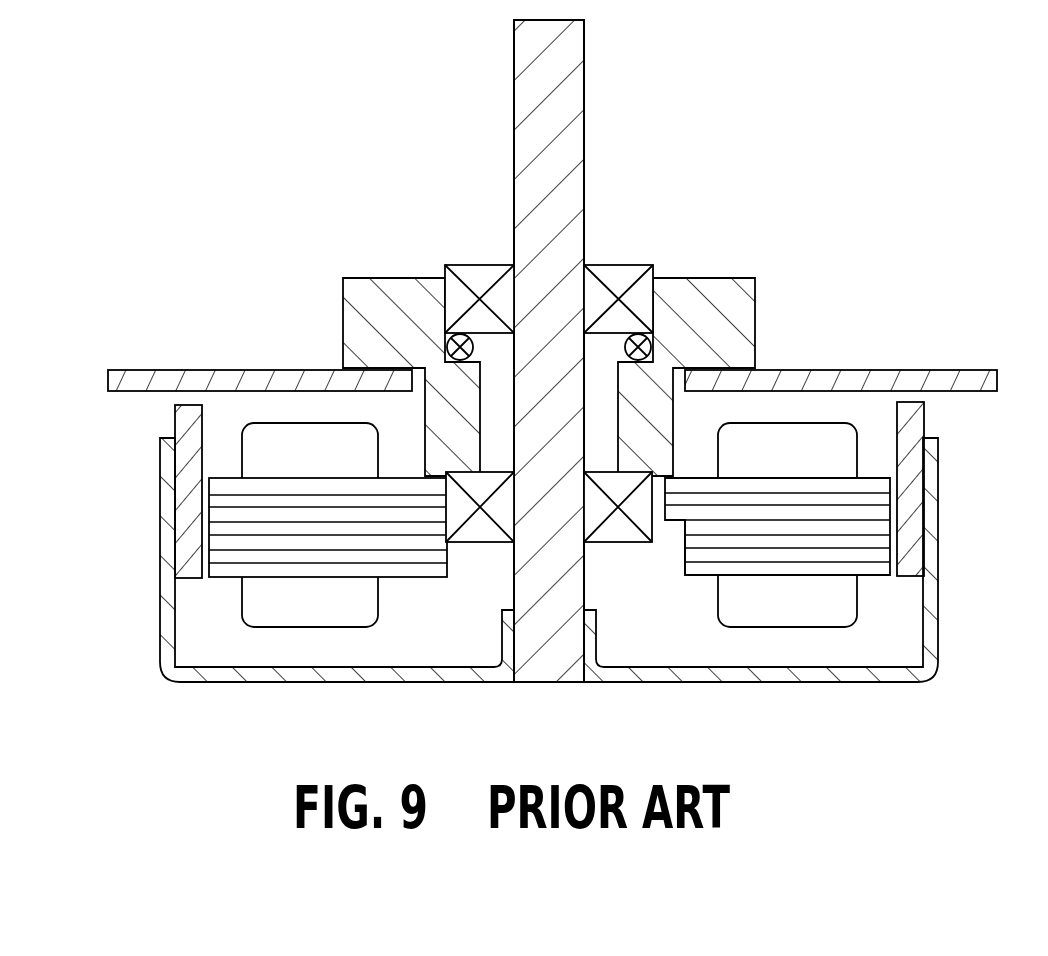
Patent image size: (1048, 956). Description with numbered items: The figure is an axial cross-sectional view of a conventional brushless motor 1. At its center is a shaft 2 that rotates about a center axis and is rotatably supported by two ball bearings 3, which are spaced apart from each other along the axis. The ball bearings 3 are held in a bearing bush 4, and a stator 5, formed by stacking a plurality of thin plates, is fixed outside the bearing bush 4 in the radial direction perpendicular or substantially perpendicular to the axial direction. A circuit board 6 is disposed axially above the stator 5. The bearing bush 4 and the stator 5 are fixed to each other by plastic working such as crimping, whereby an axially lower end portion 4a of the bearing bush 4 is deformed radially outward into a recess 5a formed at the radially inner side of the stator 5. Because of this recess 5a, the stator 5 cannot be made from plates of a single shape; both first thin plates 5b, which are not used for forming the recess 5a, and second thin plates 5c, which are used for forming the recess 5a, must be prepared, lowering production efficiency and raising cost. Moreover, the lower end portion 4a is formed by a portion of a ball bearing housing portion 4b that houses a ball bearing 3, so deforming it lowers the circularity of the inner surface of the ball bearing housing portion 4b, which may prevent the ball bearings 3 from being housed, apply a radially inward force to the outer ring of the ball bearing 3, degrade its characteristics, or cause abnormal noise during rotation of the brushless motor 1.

The brushless motor 1 is at (172, 62).
The shaft 2 is at (527, 138).
The ball bearings 3 is at (477, 277).
The bearing bush 4 is at (534, 433).
The axially lower end portion 4a is at (666, 520).
The ball bearing housing portion 4b is at (666, 520).
The stator 5 is at (788, 416).
The recess 5a is at (678, 562).
The first thin plates 5b is at (858, 500).
The second thin plates 5c is at (857, 557).
The circuit board 6 is at (857, 368).